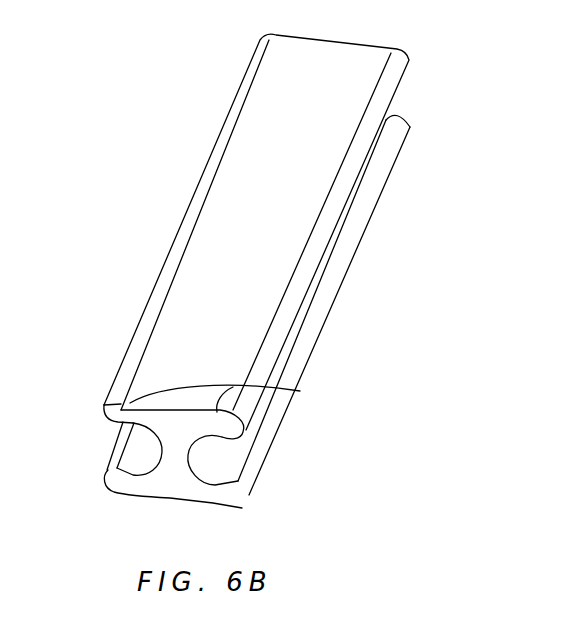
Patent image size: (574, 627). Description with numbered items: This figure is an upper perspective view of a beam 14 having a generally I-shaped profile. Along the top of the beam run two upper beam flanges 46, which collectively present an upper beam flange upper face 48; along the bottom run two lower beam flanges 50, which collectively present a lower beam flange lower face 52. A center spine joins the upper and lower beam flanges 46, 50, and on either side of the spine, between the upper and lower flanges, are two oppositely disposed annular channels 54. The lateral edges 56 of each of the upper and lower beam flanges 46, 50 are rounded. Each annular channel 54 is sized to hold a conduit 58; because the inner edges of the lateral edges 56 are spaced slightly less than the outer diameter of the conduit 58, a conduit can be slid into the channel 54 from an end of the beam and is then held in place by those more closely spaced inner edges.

The beam 14 is at (187, 217).
The upper beam flanges 46 is at (300, 391).
The upper beam flange upper face 48 is at (270, 265).
The lower beam flanges 50 is at (213, 493).
The lower beam flange lower face 52 is at (177, 498).
The annular channels 54 is at (140, 447).
The lateral edges 56 is at (100, 411).
The conduit 58 is at (143, 483).